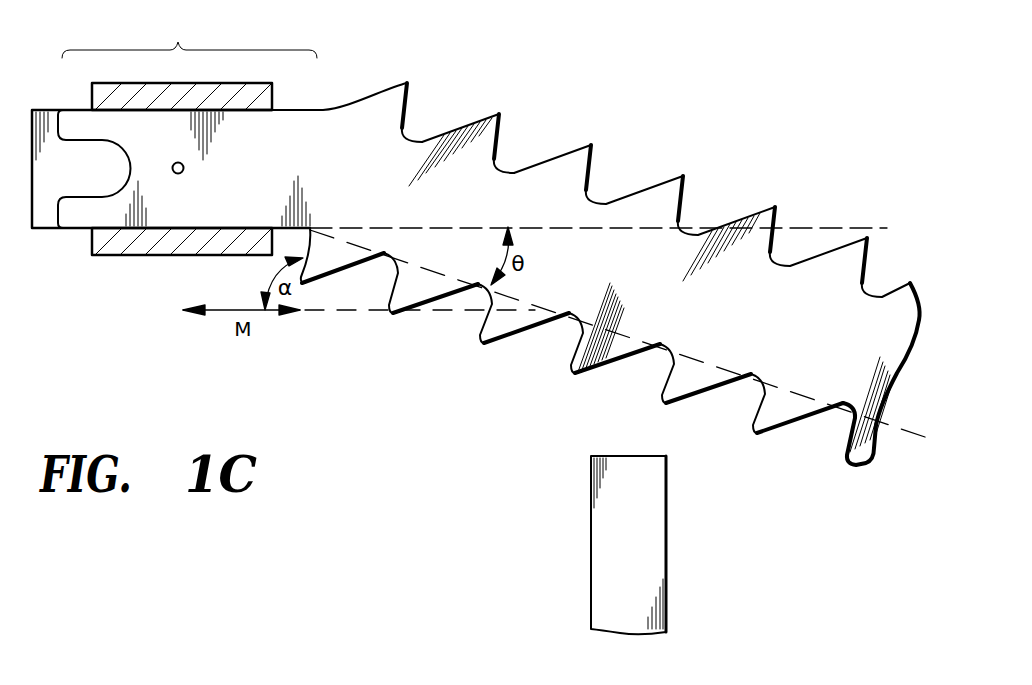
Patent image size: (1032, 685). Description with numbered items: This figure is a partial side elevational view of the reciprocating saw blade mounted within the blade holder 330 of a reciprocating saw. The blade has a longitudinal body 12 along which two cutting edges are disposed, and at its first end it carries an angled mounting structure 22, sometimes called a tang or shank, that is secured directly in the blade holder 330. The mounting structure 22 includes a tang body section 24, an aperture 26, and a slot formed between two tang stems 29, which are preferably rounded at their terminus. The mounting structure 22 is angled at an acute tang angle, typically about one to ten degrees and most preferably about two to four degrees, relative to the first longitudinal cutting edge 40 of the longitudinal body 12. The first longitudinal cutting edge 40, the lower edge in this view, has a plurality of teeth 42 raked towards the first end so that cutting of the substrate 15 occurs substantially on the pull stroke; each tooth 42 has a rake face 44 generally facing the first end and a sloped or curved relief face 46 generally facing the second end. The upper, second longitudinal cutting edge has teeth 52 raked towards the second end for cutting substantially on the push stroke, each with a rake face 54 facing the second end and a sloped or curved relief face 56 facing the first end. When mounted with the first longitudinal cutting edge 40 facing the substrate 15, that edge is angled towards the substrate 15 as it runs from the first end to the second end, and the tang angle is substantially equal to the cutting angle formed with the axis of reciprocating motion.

The longitudinal body 12 is at (448, 221).
The substrate 15 is at (636, 526).
The angled mounting structure 22 is at (178, 43).
The tang body section 24 is at (196, 216).
The aperture 26 is at (184, 170).
The tang stems 29 is at (73, 138).
The blade holder 330 is at (270, 103).
The first longitudinal cutting edge 40 is at (753, 376).
The teeth 42 is at (681, 382).
The rake face 44 is at (480, 323).
The relief face 46 is at (515, 336).
The teeth 52 is at (590, 154).
The rake face 54 is at (507, 128).
The relief face 56 is at (474, 124).